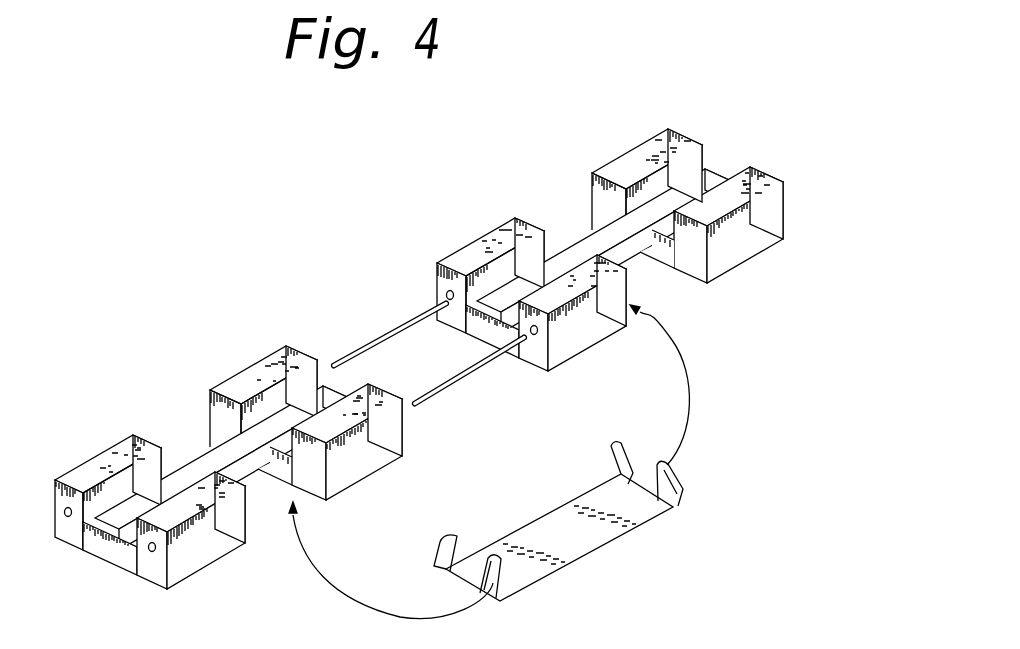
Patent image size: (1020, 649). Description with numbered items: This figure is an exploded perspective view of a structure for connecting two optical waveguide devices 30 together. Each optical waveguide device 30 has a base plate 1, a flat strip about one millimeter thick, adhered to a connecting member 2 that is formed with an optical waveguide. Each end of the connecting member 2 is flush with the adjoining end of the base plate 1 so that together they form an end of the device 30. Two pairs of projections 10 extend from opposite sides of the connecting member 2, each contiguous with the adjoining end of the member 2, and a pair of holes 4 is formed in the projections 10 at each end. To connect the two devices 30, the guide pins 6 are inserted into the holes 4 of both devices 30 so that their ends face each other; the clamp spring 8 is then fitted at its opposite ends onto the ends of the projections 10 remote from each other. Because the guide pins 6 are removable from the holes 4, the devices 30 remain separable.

The base plate 1 is at (185, 476).
The connecting member 2 is at (358, 464).
The holes 4 is at (535, 312).
The guide pins 6 is at (437, 383).
The clamp spring 8 is at (593, 552).
The projections 10 is at (307, 408).
The optical waveguide device 30 is at (208, 562).